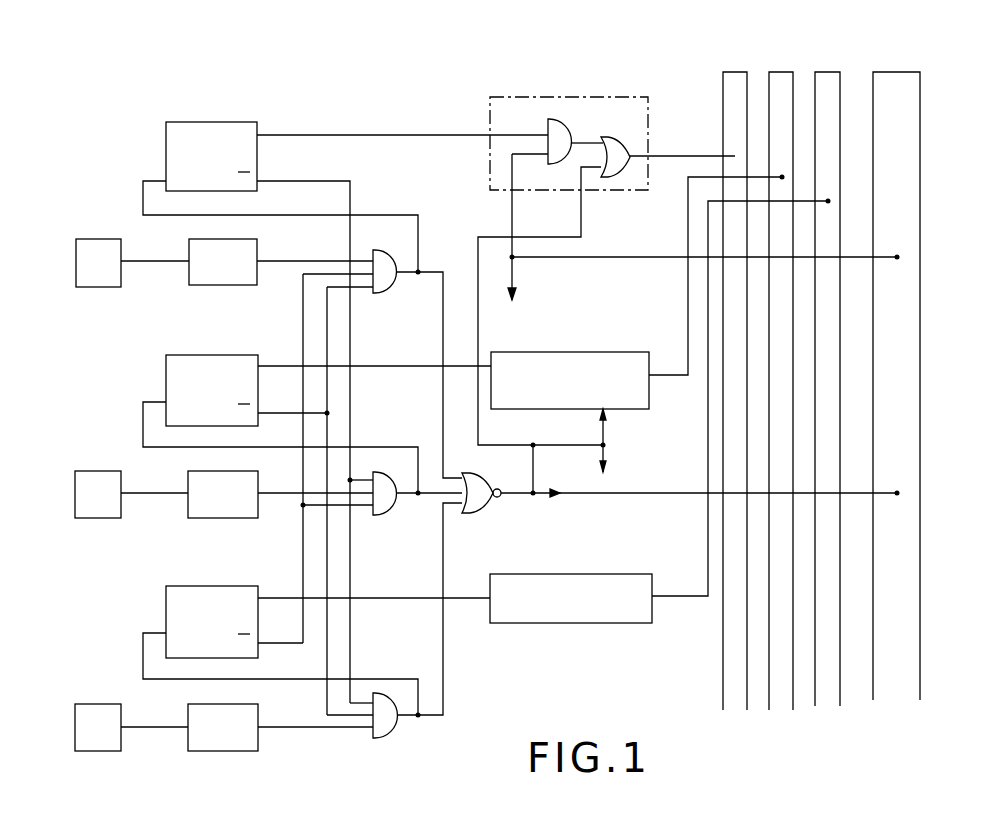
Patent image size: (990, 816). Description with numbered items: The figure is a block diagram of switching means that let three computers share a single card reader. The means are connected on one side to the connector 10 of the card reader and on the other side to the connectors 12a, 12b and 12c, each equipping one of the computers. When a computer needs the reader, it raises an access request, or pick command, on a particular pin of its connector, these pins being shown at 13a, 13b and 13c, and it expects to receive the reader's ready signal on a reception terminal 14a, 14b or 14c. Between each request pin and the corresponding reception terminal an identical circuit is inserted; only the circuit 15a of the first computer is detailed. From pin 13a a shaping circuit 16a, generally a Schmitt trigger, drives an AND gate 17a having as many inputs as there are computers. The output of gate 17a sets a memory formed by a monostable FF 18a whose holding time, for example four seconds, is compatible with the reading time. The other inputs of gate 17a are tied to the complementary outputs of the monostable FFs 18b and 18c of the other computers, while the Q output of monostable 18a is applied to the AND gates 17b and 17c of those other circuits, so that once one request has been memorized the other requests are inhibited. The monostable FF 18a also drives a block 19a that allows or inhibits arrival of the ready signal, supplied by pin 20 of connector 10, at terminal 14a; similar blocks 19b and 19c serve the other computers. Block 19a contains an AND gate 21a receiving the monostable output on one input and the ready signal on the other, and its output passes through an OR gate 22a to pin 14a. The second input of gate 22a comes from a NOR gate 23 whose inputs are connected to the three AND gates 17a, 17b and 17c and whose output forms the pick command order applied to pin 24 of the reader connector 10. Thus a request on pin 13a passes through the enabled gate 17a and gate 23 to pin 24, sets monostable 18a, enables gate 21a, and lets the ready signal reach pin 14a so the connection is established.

The connector 10 is at (905, 68).
The connector 12a is at (726, 71).
The connector 12b is at (776, 71).
The connector 12c is at (821, 71).
The access request pin 13a is at (97, 238).
The access request pin 13b is at (88, 471).
The access request pin 13c is at (88, 704).
The reception terminal 14a is at (735, 153).
The reception terminal 14b is at (782, 177).
The reception terminal 14c is at (828, 201).
The circuit 15a is at (242, 118).
The shaping circuit 16a is at (207, 285).
The AND gate 17a is at (380, 282).
The AND gate 17b is at (380, 503).
The AND gate 17c is at (393, 730).
The monostable FF 18a is at (166, 154).
The monostable FF 18b is at (166, 385).
The monostable FF 18c is at (198, 586).
The block 19a is at (543, 97).
The block 19b is at (582, 370).
The block 19c is at (580, 585).
The ready pin 20 is at (897, 257).
The AND gate 21a is at (560, 137).
The OR gate 22a is at (613, 168).
The NOR gate 23 is at (480, 500).
The pick command pin 24 is at (897, 493).